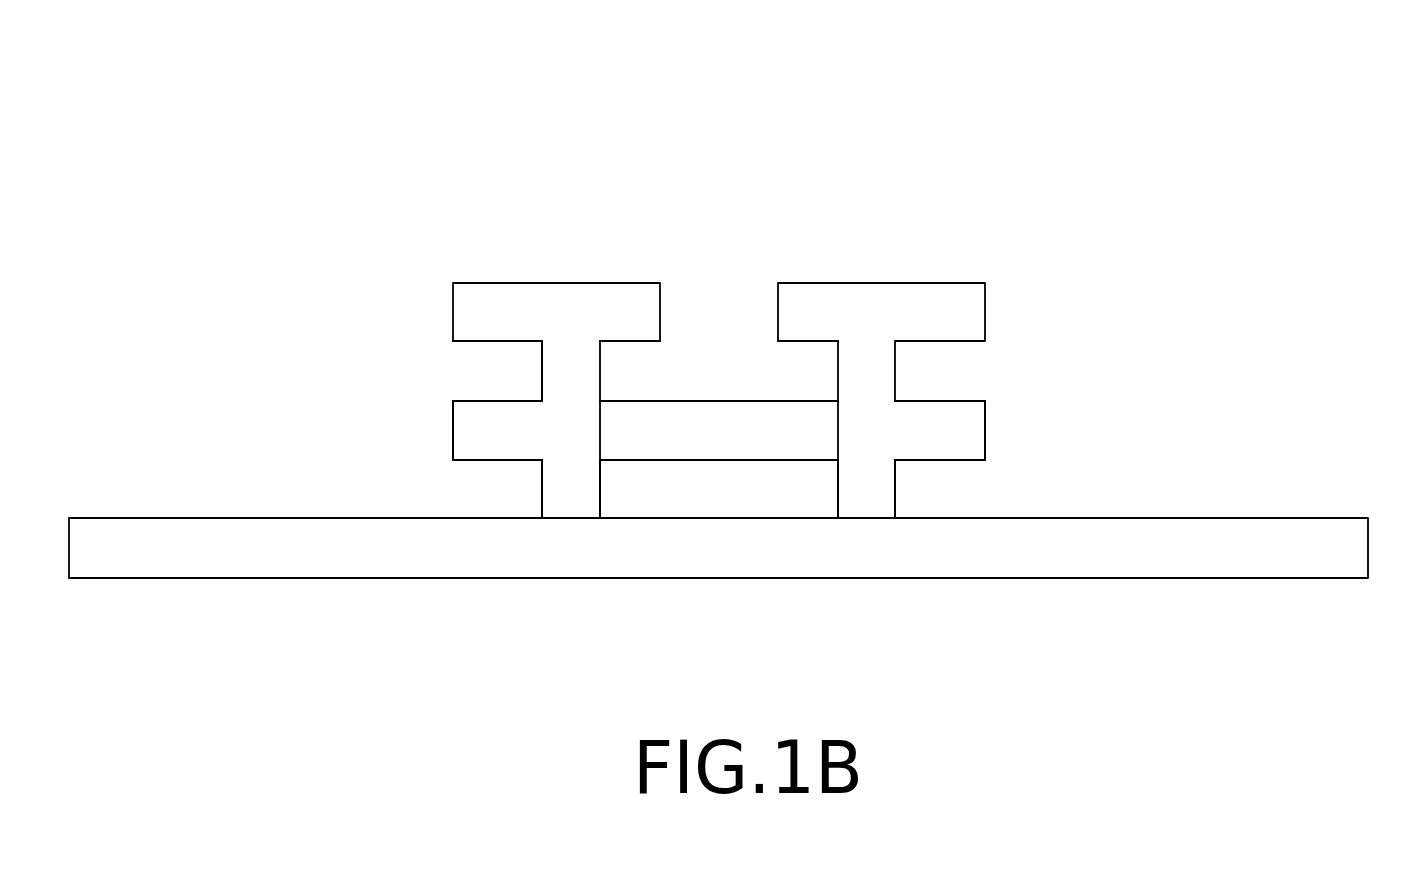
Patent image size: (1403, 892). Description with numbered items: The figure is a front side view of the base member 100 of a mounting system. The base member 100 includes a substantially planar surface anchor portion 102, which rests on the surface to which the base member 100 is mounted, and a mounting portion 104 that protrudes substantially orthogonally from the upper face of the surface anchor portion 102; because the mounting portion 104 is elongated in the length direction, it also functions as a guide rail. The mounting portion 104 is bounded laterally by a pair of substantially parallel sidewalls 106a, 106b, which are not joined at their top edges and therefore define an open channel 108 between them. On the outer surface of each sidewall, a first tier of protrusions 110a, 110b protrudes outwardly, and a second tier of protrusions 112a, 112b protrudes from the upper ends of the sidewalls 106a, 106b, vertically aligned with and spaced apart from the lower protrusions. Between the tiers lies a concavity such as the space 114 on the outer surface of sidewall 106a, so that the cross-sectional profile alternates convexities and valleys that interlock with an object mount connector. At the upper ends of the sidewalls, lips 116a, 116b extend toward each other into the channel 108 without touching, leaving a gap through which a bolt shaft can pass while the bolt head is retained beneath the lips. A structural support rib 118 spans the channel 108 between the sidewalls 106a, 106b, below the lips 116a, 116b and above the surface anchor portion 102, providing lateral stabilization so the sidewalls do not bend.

The base member 100 is at (1050, 85).
The surface anchor portion 102 is at (352, 578).
The mounting portion 104 is at (985, 258).
The sidewall 106a is at (542, 483).
The sidewall 106b is at (895, 485).
The open channel 108 is at (738, 379).
The protrusion 110a is at (453, 427).
The protrusion 110b is at (985, 422).
The protrusion 112a is at (453, 300).
The protrusion 112b is at (985, 298).
The space 114 is at (515, 386).
The lip 116a is at (622, 316).
The lip 116b is at (810, 316).
The structural support rib 118 is at (738, 446).